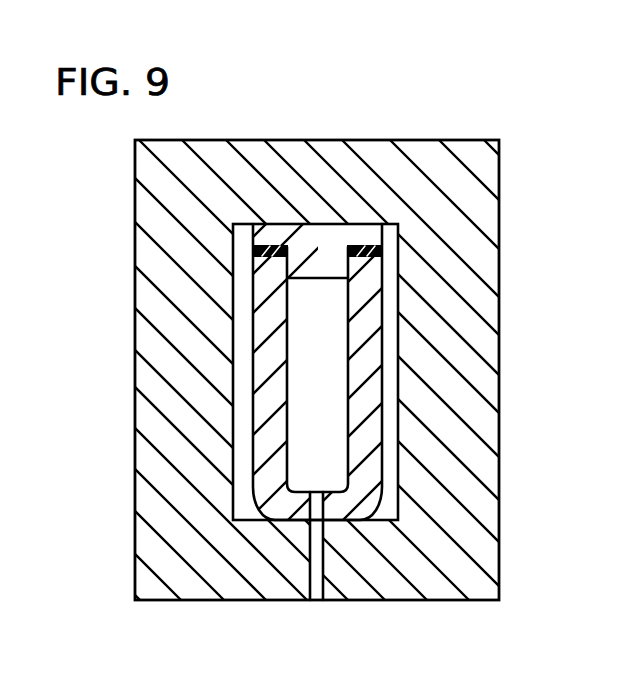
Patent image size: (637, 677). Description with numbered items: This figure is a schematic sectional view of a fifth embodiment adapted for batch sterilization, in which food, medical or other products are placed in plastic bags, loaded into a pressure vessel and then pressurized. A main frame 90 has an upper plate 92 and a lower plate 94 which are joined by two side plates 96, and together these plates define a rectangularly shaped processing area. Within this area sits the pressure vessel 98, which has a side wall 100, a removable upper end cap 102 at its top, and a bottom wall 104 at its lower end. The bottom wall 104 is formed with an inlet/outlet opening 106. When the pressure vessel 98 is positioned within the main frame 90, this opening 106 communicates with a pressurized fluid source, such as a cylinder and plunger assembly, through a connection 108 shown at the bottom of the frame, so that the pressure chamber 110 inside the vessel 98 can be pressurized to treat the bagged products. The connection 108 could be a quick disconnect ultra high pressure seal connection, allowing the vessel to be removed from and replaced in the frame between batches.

The main frame 90 is at (116, 207).
The upper plate 92 is at (320, 180).
The lower plate 94 is at (287, 563).
The side plates 96 is at (150, 295).
The pressure vessel 98 is at (262, 328).
The side wall 100 is at (263, 353).
The removable upper end cap 102 is at (335, 235).
The bottom wall 104 is at (292, 508).
The inlet/outlet opening 106 is at (317, 507).
The connection 108 is at (314, 593).
The pressure chamber 110 is at (303, 378).